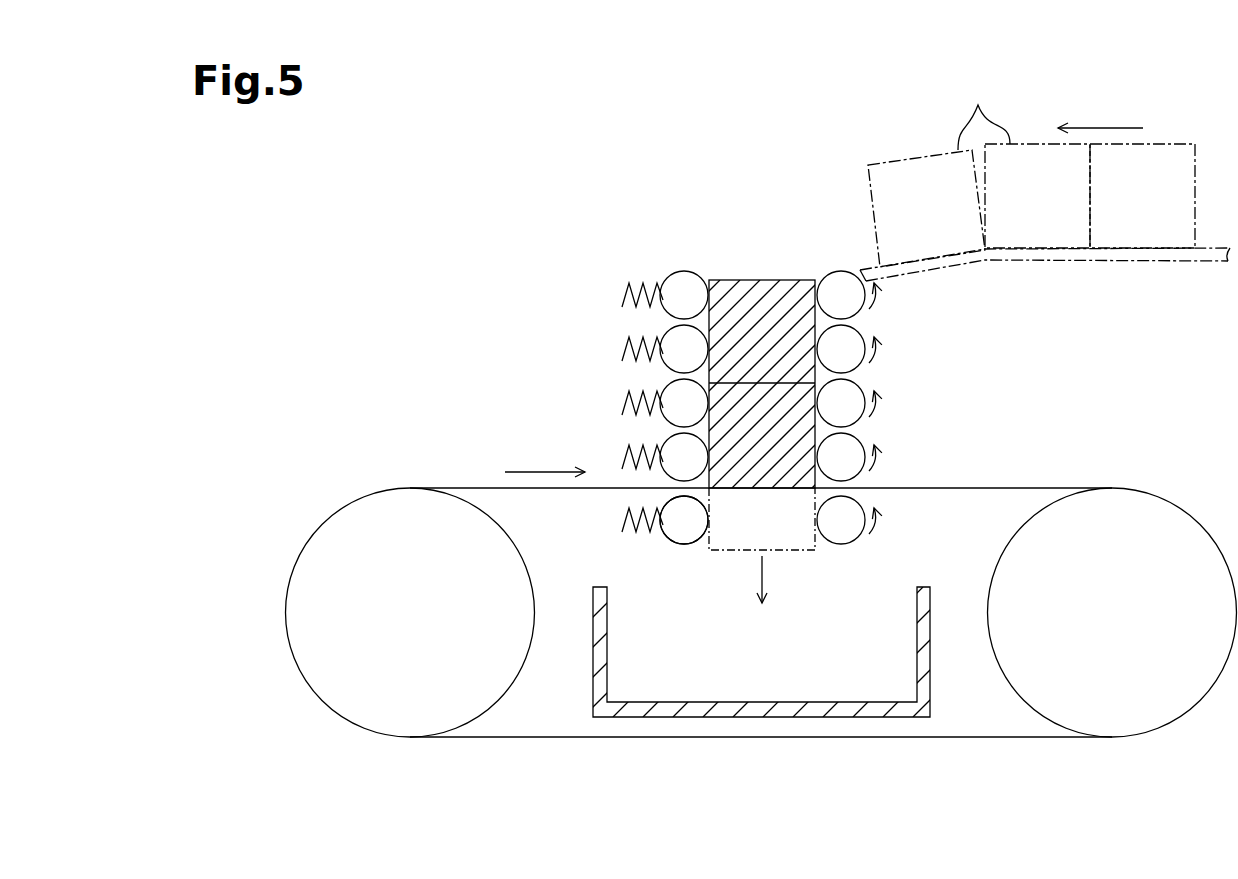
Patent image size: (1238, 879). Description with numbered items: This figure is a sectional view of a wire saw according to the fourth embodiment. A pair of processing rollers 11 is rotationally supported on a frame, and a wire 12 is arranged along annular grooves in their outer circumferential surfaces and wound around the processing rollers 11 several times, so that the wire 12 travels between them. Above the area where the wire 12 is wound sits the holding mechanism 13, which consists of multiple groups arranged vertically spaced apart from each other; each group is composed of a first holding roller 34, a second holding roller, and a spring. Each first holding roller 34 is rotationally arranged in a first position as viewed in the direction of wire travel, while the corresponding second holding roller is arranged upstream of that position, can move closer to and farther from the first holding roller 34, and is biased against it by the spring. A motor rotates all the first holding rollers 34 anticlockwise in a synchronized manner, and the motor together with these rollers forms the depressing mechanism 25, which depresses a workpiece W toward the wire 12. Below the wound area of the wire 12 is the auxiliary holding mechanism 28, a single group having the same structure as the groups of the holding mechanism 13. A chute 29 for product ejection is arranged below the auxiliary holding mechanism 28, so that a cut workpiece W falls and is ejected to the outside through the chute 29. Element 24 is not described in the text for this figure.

The processing roller 11 is at (405, 497).
The wire 12 is at (476, 488).
The holding mechanism 13 is at (641, 351).
The supply conveyor 24 is at (1123, 258).
The depressing mechanism 25 is at (865, 404).
The auxiliary holding mechanism 28 is at (641, 544).
The chute 29 is at (593, 655).
The first holding roller 34 is at (853, 336).
The workpiece W is at (762, 285).